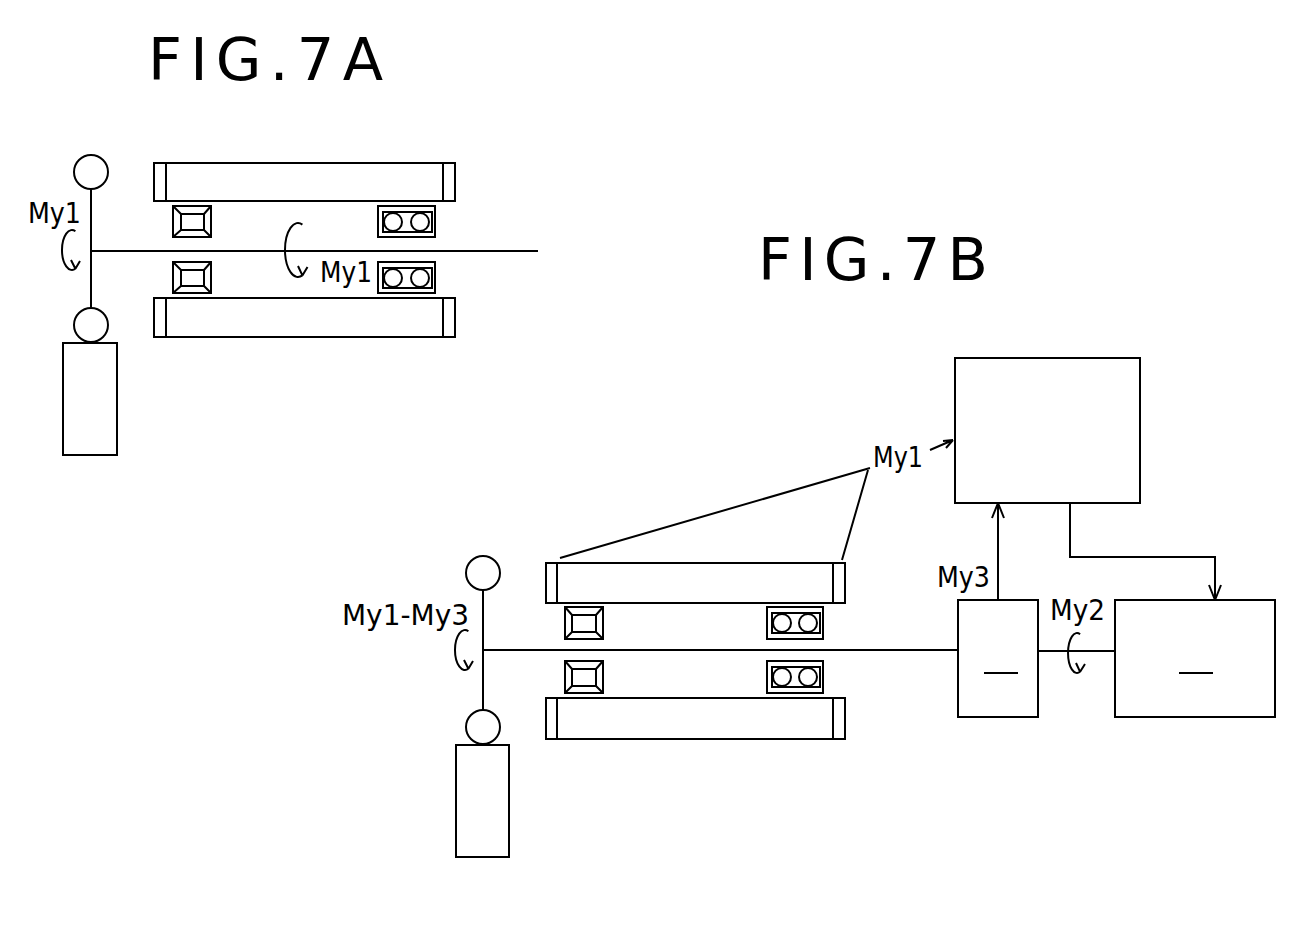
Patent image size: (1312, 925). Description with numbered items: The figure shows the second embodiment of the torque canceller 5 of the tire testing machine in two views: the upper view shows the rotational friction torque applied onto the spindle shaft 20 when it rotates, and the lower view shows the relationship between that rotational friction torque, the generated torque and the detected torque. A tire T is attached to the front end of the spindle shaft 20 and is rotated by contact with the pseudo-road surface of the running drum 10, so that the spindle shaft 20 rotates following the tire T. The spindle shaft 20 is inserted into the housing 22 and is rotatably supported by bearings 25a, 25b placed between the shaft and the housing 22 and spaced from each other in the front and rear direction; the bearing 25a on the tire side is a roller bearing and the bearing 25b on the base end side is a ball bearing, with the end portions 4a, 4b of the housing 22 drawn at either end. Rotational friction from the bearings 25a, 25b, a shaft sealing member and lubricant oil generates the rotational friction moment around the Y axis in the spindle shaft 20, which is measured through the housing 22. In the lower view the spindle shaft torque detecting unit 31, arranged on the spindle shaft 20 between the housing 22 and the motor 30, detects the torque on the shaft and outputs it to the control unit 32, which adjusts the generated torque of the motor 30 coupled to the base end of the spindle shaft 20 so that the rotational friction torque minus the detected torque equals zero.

In FIG. 7A, the tire T is at (78, 172).
In FIG. 7A, the running drum 10 is at (107, 432).
In FIG. 7B, the running drum 10 is at (498, 832).
In FIG. 7A, the spindle shaft 20 is at (507, 253).
In FIG. 7B, the spindle shaft 20 is at (897, 653).
In FIG. 7A, the housing 22 is at (313, 170).
In FIG. 7B, the housing 22 is at (703, 568).
In FIG. 7A, the left end portion 4a is at (170, 157).
In FIG. 7B, the left end portion 4a is at (558, 549).
In FIG. 7A, the right end portion 4b is at (462, 157).
In FIG. 7B, the right end portion 4b is at (860, 584).
In FIG. 7A, the bearing 25a is at (193, 293).
In FIG. 7B, the bearing 25a is at (585, 693).
In FIG. 7A, the bearing 25b is at (407, 293).
In FIG. 7B, the bearing 25b is at (797, 693).
In FIG. 7B, the torque canceller 5 is at (1160, 394).
In FIG. 7B, the control unit 32 is at (1140, 465).
In FIG. 7B, the spindle shaft torque detecting unit 31 is at (998, 658).
In FIG. 7B, the motor for the spindle shaft 30 is at (1195, 658).